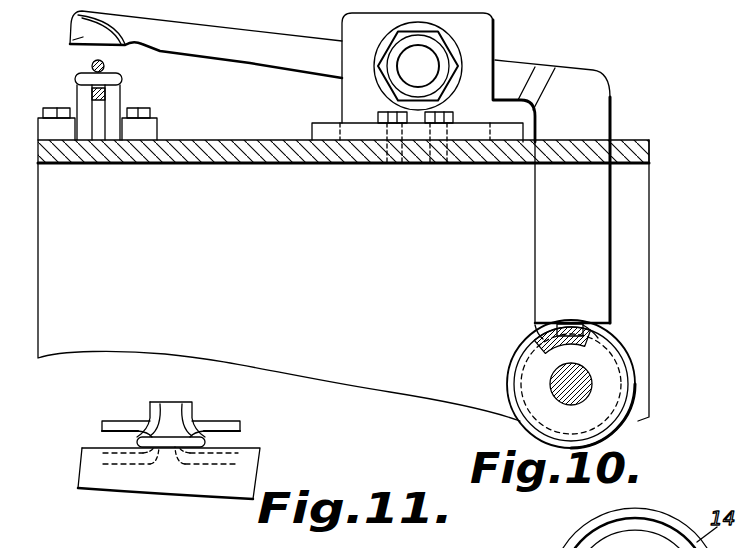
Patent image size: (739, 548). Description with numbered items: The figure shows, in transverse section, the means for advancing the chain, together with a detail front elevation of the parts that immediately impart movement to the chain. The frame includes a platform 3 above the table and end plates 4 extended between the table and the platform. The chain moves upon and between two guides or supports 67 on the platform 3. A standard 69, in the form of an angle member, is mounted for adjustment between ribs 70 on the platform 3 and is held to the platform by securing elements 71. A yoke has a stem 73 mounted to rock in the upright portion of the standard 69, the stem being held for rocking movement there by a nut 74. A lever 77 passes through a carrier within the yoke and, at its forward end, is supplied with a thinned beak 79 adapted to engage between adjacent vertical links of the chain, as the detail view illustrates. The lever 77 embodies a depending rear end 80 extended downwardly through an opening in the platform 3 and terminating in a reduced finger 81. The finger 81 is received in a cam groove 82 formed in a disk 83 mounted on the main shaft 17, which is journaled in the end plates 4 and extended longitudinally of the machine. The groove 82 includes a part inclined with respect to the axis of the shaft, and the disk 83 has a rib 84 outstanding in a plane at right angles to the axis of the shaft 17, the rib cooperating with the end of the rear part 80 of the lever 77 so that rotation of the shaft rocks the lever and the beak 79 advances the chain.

In FIG. 10, the platform 3 is at (643, 157).
In FIG. 10, the end plates 4 is at (642, 297).
In FIG. 10, the main shaft 17 is at (548, 391).
In FIG. 10, the guides 67 is at (113, 133).
In FIG. 11, the guides 67 is at (175, 483).
In FIG. 10, the standard 69 is at (497, 43).
In FIG. 10, the ribs 70 is at (512, 137).
In FIG. 10, the securing elements 71 is at (445, 115).
In FIG. 10, the stem 73 is at (418, 65).
In FIG. 10, the nut 74 is at (445, 55).
In FIG. 10, the lever 77 is at (268, 38).
In FIG. 11, the lever 77 is at (193, 414).
In FIG. 10, the thinned beak 79 is at (75, 36).
In FIG. 11, the thinned beak 79 is at (165, 428).
In FIG. 10, the depending rear end 80 is at (545, 257).
In FIG. 10, the reduced finger 81 is at (577, 330).
In FIG. 10, the cam groove 82 is at (540, 323).
In FIG. 10, the disk 83 is at (547, 360).
In FIG. 10, the rib 84 is at (637, 382).